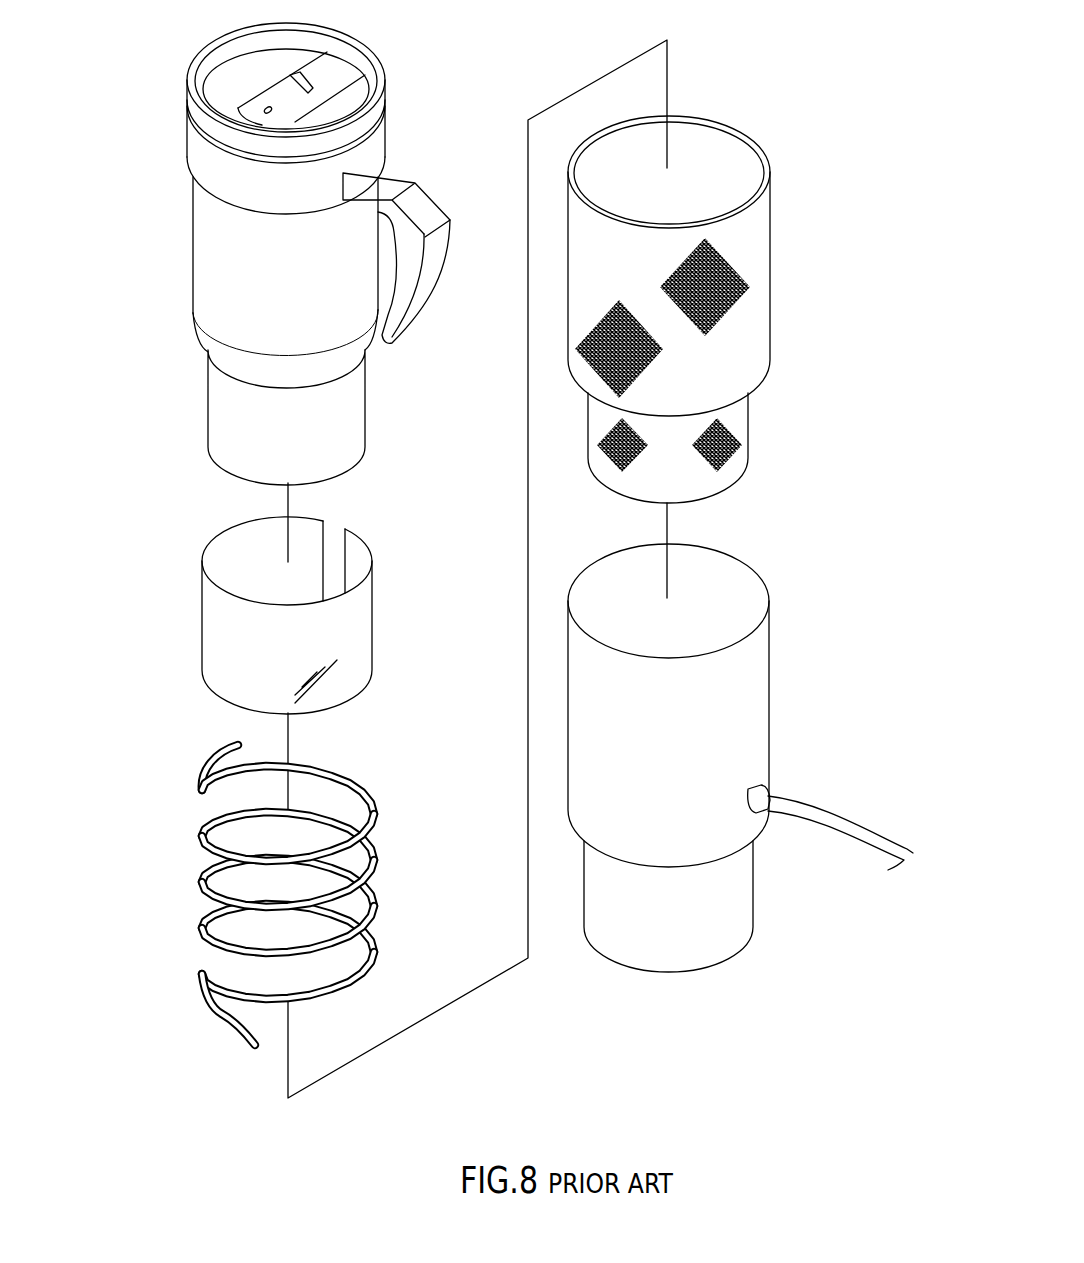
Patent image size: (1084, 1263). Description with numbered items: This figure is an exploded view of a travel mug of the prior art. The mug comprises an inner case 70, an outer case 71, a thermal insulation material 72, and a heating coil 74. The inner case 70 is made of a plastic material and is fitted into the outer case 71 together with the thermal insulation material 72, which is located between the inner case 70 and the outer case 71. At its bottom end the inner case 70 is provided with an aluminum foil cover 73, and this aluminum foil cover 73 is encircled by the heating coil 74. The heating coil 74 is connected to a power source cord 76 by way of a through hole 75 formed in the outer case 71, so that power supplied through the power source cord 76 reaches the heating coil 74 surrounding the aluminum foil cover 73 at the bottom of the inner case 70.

The inner case 70 is at (205, 263).
The outer case 71 is at (753, 679).
The thermal insulation material 72 is at (748, 300).
The aluminum foil cover 73 is at (360, 617).
The heating coil 74 is at (375, 803).
The through hole 75 is at (751, 775).
The power source cord 76 is at (824, 826).